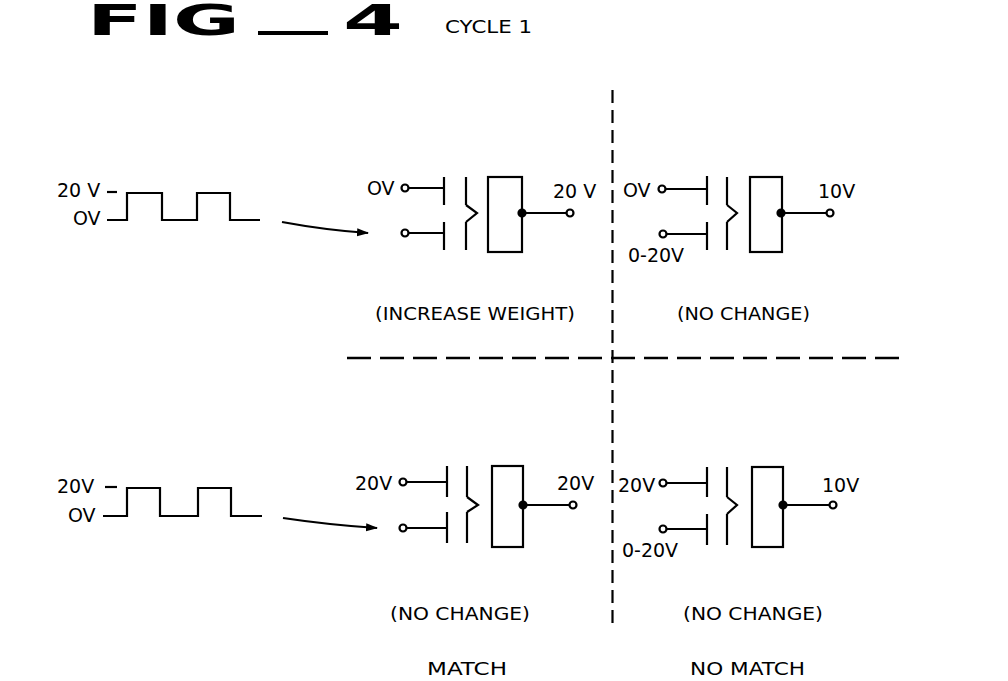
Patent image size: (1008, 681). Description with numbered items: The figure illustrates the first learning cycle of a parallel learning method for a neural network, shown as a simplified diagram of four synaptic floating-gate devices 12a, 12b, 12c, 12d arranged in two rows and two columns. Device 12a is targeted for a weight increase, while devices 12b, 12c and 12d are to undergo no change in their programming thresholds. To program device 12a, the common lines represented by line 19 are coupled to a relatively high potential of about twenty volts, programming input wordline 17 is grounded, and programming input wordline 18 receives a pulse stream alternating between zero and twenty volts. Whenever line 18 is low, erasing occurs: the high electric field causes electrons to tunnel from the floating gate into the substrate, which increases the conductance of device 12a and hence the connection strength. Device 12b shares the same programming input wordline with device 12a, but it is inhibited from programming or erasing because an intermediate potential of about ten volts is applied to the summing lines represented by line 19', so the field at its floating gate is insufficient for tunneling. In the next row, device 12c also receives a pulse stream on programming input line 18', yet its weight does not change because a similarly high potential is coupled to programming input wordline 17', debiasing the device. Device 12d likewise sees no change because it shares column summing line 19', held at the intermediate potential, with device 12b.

The device 12a is at (485, 152).
The device 12b is at (778, 152).
The device 12c is at (477, 438).
The device 12d is at (767, 445).
The programming input wordline 17 is at (555, 173).
The programming input wordline 18 is at (555, 259).
The line 19 is at (548, 385).
The programming input wordline 17' is at (554, 458).
The programming input line 18' is at (554, 553).
The column summing line 19' is at (811, 385).